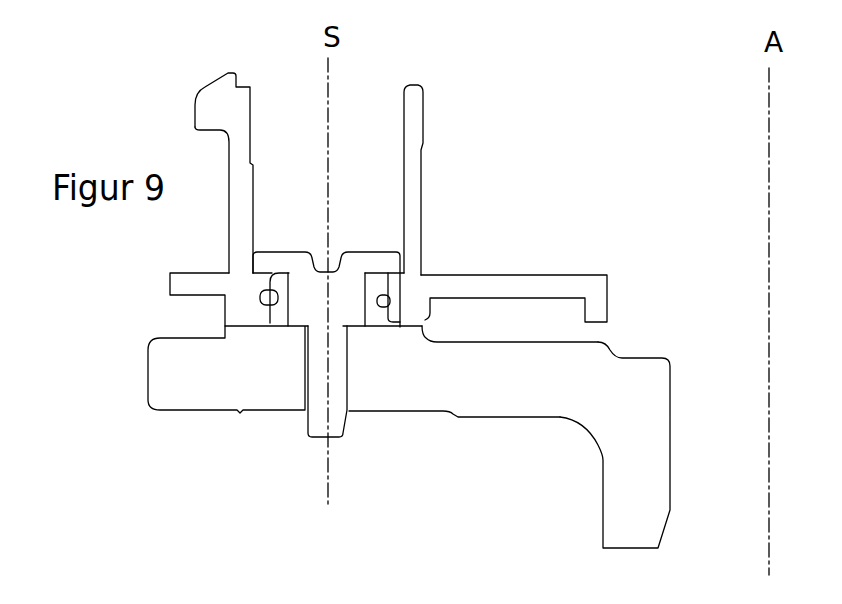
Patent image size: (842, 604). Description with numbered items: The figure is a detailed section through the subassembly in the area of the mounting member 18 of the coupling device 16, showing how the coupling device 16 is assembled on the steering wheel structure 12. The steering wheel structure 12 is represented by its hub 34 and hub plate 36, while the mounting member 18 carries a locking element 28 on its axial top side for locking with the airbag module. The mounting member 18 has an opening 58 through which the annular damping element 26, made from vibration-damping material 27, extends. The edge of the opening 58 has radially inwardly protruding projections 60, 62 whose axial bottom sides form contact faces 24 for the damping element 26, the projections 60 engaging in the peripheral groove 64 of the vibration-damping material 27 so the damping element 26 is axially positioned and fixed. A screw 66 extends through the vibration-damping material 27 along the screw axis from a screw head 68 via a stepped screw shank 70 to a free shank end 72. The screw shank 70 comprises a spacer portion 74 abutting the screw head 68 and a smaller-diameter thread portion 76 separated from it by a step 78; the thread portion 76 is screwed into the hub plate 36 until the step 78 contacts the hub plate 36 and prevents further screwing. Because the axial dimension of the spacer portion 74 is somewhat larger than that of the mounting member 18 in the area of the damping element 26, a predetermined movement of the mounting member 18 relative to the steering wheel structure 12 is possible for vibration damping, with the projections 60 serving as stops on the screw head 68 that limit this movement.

The steering wheel structure 12 is at (148, 428).
The coupling device 16 is at (520, 157).
The mounting member 18 is at (420, 312).
The contact face 24 is at (283, 272).
The damping element 26 is at (366, 320).
The vibration-damping material 27 is at (260, 307).
The locking element 28 is at (222, 110).
The hub 34 is at (645, 517).
The hub plate 36 is at (183, 373).
The opening 58 is at (348, 209).
The projections 60 is at (383, 298).
The projections 62 is at (261, 284).
The groove 64 is at (263, 298).
The screw 66 is at (350, 242).
The screw head 68 is at (382, 260).
The screw shank 70 is at (317, 413).
The free shank end 72 is at (335, 443).
The spacer portion 74 is at (310, 297).
The thread portion 76 is at (317, 363).
The step 78 is at (297, 326).